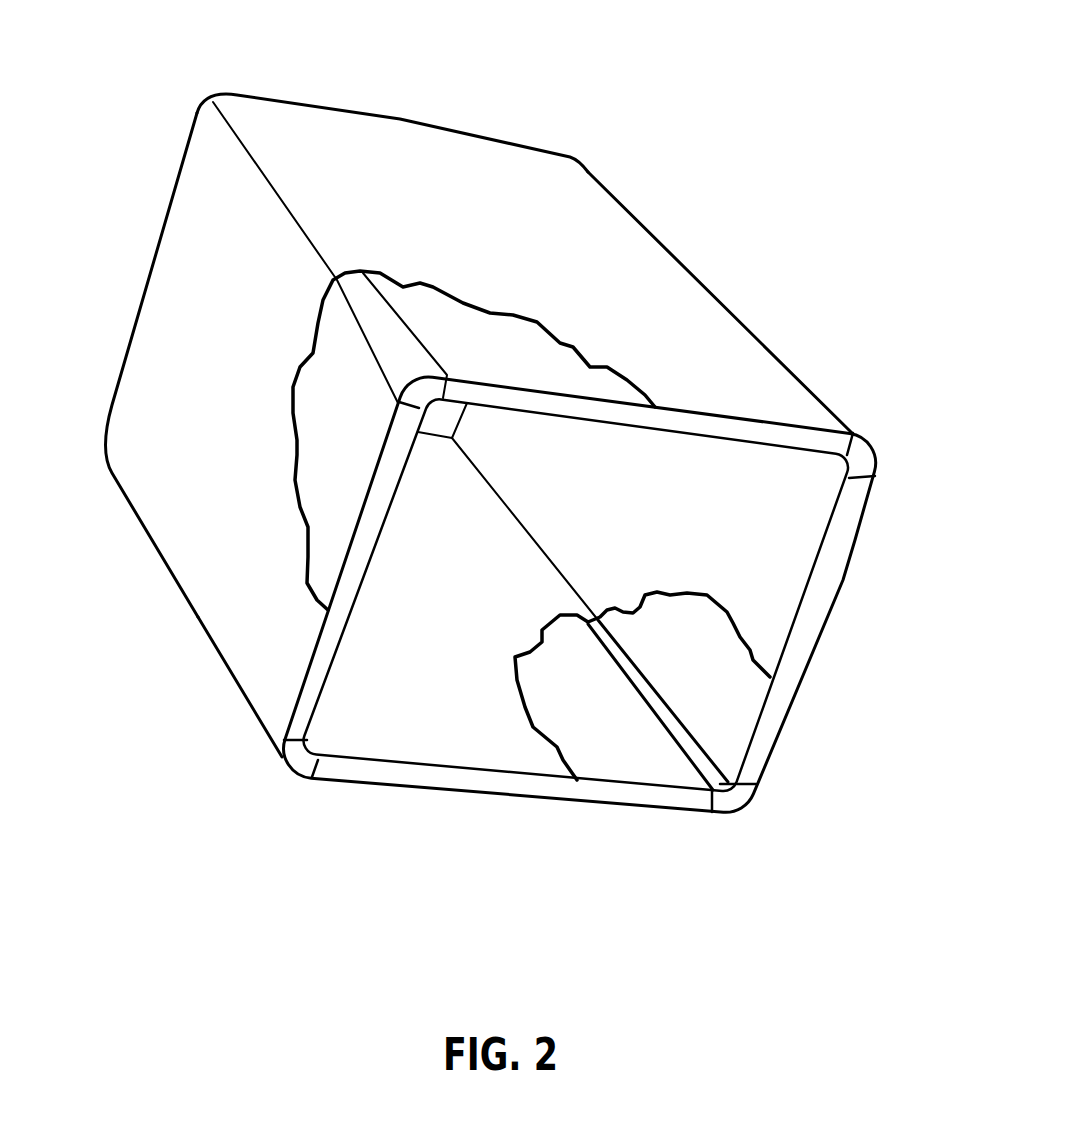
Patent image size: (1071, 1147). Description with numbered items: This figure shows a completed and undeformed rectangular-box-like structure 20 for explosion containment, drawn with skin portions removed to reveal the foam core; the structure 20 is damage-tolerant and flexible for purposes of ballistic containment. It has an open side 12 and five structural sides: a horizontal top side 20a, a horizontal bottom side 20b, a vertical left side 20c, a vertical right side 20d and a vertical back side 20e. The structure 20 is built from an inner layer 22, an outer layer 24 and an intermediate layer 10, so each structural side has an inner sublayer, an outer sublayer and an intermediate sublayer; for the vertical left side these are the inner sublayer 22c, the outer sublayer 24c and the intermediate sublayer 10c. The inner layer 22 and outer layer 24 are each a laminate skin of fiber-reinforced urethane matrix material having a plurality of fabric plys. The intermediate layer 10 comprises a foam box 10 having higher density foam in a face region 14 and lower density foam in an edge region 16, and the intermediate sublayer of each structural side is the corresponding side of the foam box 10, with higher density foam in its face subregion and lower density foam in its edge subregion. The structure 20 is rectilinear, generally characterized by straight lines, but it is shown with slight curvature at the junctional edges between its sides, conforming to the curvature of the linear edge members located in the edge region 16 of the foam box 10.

The intermediate layer 10 is at (717, 672).
The intermediate sublayer 10c is at (328, 525).
The open side 12 is at (373, 702).
The face region 14 is at (500, 335).
The edge region 16 is at (388, 337).
The completed structure 20 is at (668, 119).
The horizontal top side 20a is at (429, 177).
The horizontal bottom side 20b is at (443, 728).
The vertical left side 20c is at (192, 362).
The vertical right side 20d is at (777, 553).
The vertical back side 20e is at (464, 374).
The inner layer 22 is at (803, 510).
The inner sublayer 22c is at (372, 565).
The outer layer 24 is at (727, 349).
The outer sublayer 24c is at (260, 623).